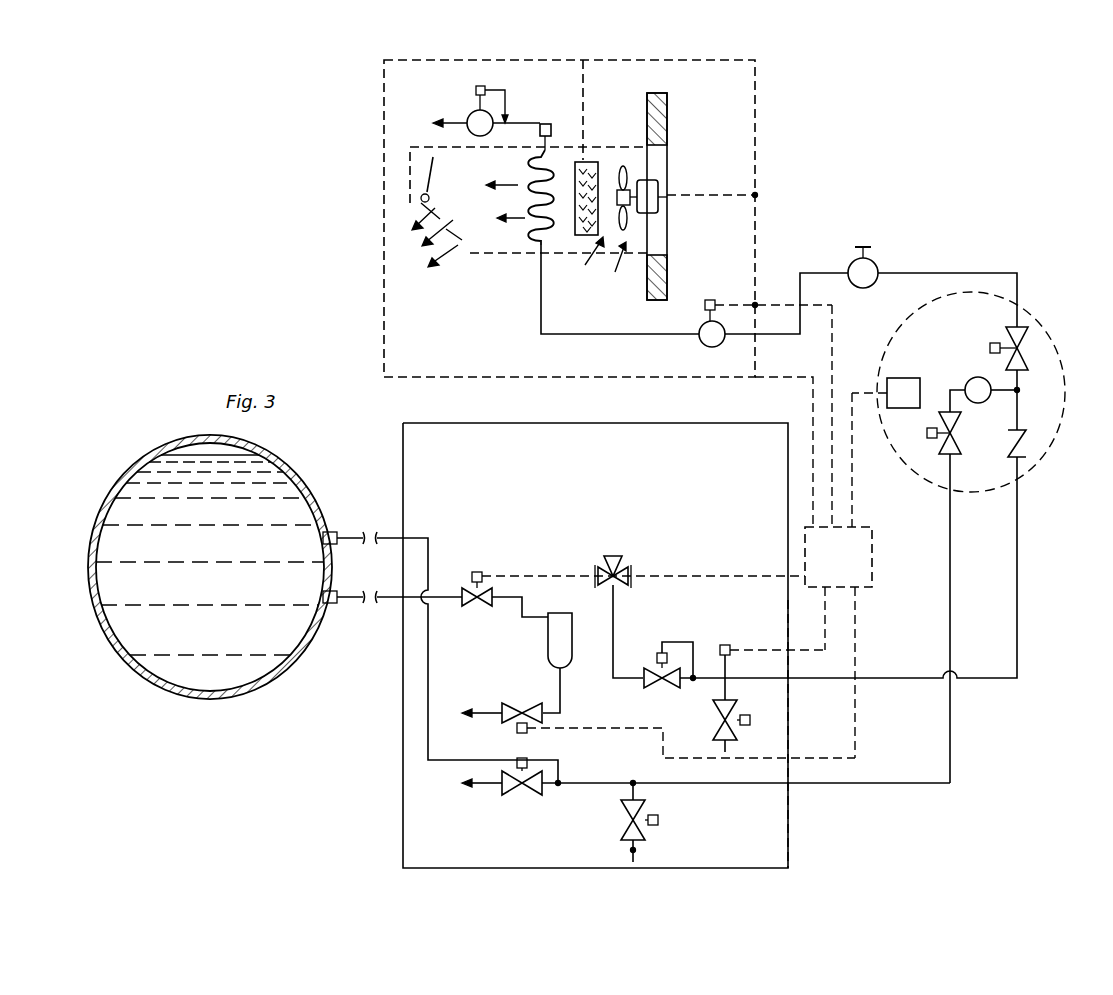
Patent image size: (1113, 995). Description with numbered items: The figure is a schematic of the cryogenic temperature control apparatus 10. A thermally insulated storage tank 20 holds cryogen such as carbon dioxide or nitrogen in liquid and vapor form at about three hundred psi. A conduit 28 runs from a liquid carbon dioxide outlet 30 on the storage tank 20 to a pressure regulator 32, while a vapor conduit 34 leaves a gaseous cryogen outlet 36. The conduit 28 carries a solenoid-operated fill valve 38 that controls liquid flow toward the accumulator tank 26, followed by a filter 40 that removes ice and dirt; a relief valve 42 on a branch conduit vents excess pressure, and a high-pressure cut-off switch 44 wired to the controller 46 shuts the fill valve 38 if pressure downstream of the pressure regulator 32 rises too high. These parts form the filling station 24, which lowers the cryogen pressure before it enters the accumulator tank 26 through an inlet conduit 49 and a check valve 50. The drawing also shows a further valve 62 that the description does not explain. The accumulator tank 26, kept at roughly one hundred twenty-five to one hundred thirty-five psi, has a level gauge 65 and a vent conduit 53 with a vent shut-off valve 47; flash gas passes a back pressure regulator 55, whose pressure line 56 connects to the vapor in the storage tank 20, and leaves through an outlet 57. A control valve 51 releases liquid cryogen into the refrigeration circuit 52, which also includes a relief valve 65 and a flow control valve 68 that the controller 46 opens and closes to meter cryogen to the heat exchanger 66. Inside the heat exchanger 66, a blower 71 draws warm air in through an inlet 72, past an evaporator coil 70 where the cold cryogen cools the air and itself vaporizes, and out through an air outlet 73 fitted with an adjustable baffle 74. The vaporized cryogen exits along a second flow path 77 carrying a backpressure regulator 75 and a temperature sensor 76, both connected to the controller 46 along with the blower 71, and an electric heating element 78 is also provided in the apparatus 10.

The cryogenic temperature control apparatus 10 is at (826, 197).
The storage tank 20 is at (196, 612).
The filling station 24 is at (790, 838).
The accumulator tank 26 is at (1057, 354).
The conduit 28 is at (354, 594).
The liquid carbon dioxide outlet 30 is at (331, 604).
The pressure regulator 32 is at (669, 687).
The vapor conduit 34 is at (415, 535).
The gaseous cryogen outlet 36 is at (338, 531).
The solenoid-operated fill valve 38 is at (486, 605).
The filter 40 is at (554, 632).
The relief valve 42 is at (620, 560).
The high-pressure cut-off switch 44 is at (731, 647).
The controller 46 is at (850, 566).
The vent shut-off valve 47 is at (943, 446).
The inlet conduit 49 is at (1021, 417).
The check valve 50 is at (1029, 442).
The control valve 51 is at (1021, 333).
The refrigeration circuit 52 is at (980, 272).
The vent conduit 53 is at (949, 539).
The back pressure regulator 55 is at (530, 796).
The pressure line 56 is at (431, 659).
The outlet 57 is at (499, 786).
The drain valve 62 is at (514, 702).
The level gauge 65 is at (871, 268).
The heat exchanger 66 is at (471, 258).
The flow control valve 68 is at (705, 343).
The evaporator coil 70 is at (539, 252).
The blower 71 is at (651, 189).
The inlet 72 is at (593, 265).
The air outlet 73 is at (437, 248).
The baffle 74 is at (437, 176).
The backpressure regulator 75 is at (476, 90).
The temperature sensor 76 is at (550, 123).
The second flow path 77 is at (515, 118).
The heating element 78 is at (594, 161).